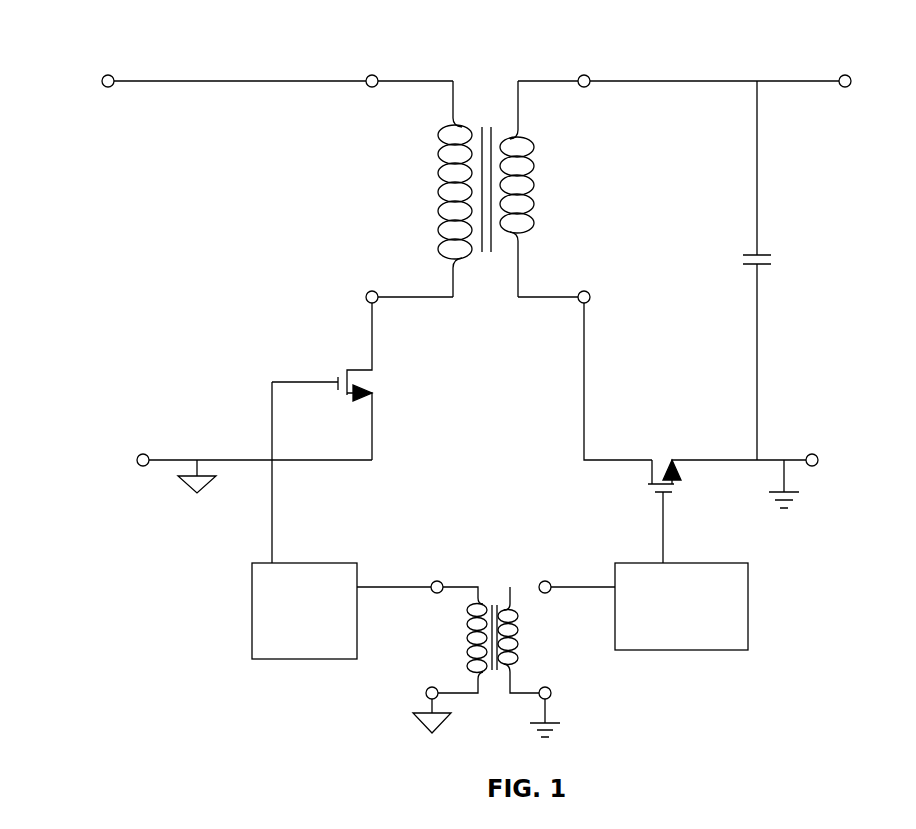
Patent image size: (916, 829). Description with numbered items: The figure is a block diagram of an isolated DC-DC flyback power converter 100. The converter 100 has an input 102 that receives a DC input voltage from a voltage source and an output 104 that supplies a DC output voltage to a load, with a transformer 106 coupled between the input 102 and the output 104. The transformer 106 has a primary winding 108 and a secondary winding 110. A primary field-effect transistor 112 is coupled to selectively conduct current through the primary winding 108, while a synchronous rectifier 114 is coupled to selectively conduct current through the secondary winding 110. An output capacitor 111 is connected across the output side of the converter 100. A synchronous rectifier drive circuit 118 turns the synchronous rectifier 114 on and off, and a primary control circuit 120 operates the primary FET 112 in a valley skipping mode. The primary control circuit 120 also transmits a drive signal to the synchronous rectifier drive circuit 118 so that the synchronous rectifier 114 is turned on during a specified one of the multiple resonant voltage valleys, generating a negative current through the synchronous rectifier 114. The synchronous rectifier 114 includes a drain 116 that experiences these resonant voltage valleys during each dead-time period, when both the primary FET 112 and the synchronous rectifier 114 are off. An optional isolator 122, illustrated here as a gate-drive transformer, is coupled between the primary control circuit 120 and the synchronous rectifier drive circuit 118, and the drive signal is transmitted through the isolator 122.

The isolated DC-DC flyback power converter 100 is at (117, 45).
The input 102 is at (105, 74).
The output 104 is at (849, 76).
The transformer 106 is at (485, 71).
The primary winding 108 is at (427, 169).
The secondary winding 110 is at (542, 196).
The output capacitor 111 is at (735, 252).
The primary field-effect transistor 112 is at (332, 369).
The synchronous rectifier 114 is at (663, 446).
The drain 116 is at (612, 461).
The synchronous rectifier drive circuit 118 is at (651, 651).
The primary control circuit 120 is at (250, 586).
The isolator 122 is at (492, 579).